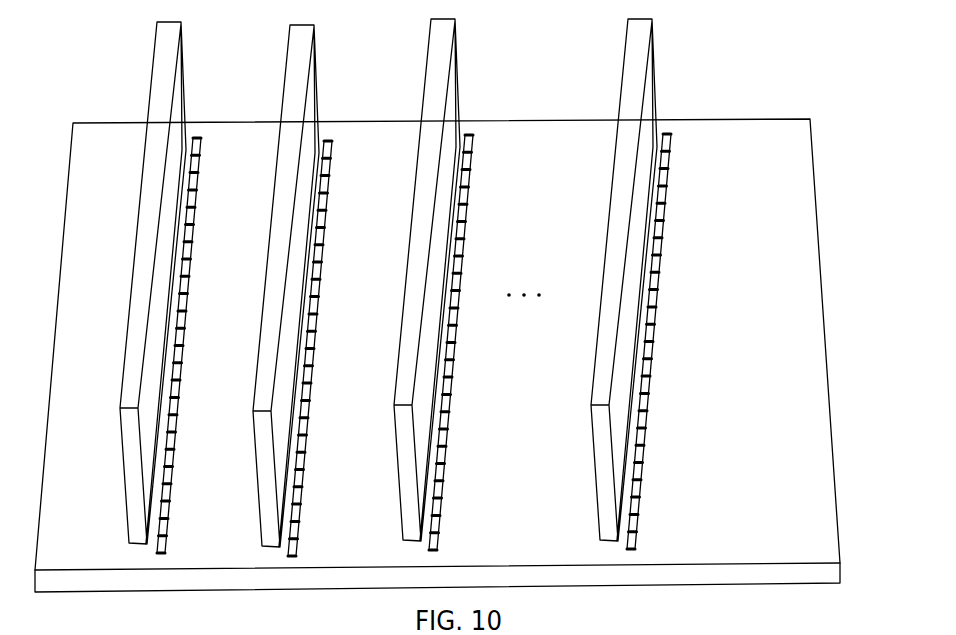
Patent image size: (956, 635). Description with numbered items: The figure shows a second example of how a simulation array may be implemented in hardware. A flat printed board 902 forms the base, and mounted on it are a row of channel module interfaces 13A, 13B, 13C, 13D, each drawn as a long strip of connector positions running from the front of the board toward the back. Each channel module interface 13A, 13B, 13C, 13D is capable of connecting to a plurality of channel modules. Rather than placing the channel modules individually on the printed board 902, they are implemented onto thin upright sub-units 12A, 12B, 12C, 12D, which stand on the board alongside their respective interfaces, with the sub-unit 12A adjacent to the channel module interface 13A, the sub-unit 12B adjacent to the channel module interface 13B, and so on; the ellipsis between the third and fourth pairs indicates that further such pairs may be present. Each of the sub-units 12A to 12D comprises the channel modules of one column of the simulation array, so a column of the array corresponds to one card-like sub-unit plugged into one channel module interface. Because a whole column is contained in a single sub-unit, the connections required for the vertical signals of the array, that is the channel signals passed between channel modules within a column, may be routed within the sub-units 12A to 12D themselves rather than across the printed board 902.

The printed board 902 is at (766, 119).
The sub-unit 12A is at (182, 26).
The sub-unit 12B is at (315, 29).
The sub-unit 12C is at (456, 24).
The sub-unit 12D is at (653, 24).
The channel module interface 13A is at (202, 141).
The channel module interface 13B is at (333, 144).
The channel module interface 13C is at (474, 139).
The channel module interface 13D is at (672, 138).